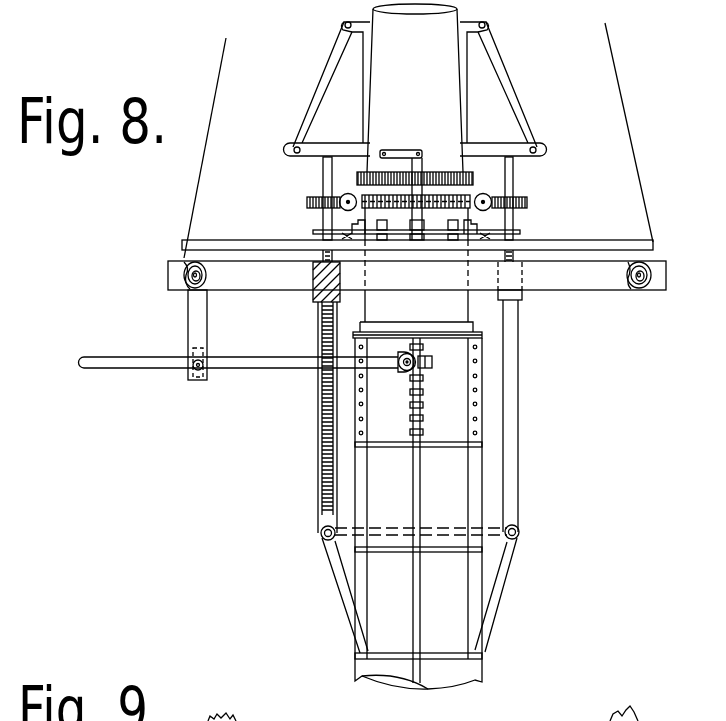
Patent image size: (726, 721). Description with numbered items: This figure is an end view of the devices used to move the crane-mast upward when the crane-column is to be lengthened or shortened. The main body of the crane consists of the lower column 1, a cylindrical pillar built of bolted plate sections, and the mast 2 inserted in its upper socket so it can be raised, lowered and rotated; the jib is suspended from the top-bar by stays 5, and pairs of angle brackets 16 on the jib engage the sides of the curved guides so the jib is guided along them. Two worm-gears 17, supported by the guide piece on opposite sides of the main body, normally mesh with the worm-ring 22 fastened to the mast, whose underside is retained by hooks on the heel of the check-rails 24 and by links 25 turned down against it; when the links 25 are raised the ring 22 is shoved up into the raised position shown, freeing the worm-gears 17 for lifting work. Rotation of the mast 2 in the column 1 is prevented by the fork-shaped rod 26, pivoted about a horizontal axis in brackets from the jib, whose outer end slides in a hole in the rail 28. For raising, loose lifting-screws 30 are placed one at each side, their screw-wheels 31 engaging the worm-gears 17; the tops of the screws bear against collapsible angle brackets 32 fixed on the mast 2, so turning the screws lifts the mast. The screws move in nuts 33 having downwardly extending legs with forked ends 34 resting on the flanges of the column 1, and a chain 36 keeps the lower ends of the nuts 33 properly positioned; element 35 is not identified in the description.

The column 1 is at (360, 492).
The mast 2 is at (416, 168).
The stays 5 is at (214, 100).
The angle brackets 16 is at (323, 237).
The worm-gears 17 is at (343, 199).
The worm-ring 22 is at (432, 172).
The check-rails 24 is at (418, 193).
The links 25 is at (403, 153).
The fork-shaped rod 26 is at (151, 363).
The rail 28 is at (200, 380).
The lifting-screws 30 is at (318, 450).
The screw-wheels 31 is at (307, 202).
The angle bracket 32 is at (367, 98).
The nuts 33 is at (313, 292).
The forked ends 34 is at (323, 545).
The strut 35 is at (345, 607).
The chain 36 is at (435, 528).